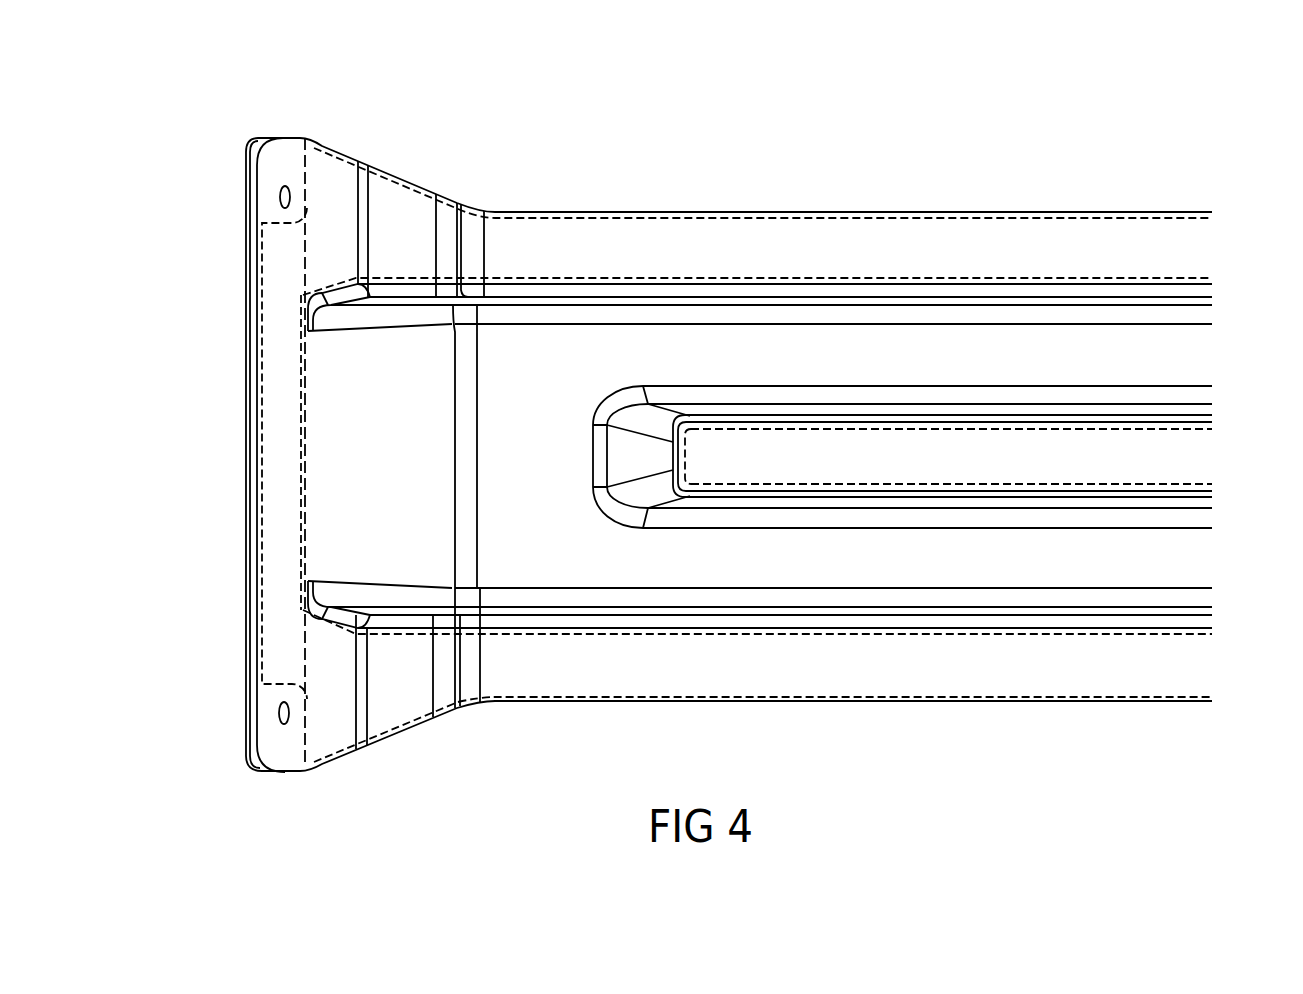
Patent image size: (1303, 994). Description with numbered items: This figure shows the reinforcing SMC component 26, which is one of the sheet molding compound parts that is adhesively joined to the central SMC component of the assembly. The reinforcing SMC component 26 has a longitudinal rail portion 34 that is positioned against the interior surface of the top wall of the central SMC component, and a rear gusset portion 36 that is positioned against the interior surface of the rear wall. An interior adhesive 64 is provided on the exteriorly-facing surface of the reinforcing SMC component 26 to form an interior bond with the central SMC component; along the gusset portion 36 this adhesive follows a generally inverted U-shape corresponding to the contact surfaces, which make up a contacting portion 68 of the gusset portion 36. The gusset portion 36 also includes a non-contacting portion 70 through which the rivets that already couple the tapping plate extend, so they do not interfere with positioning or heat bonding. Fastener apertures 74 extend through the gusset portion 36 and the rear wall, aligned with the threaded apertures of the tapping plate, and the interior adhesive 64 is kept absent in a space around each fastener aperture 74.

The reinforcing SMC component 26 is at (958, 753).
The longitudinal rail portion 34 is at (1212, 125).
The rear gusset portion 36 is at (463, 122).
The interior adhesive 64 is at (857, 430).
The contacting portion 68 is at (318, 748).
The non-contacting portion 70 is at (332, 427).
The fastener aperture 74 is at (289, 197).